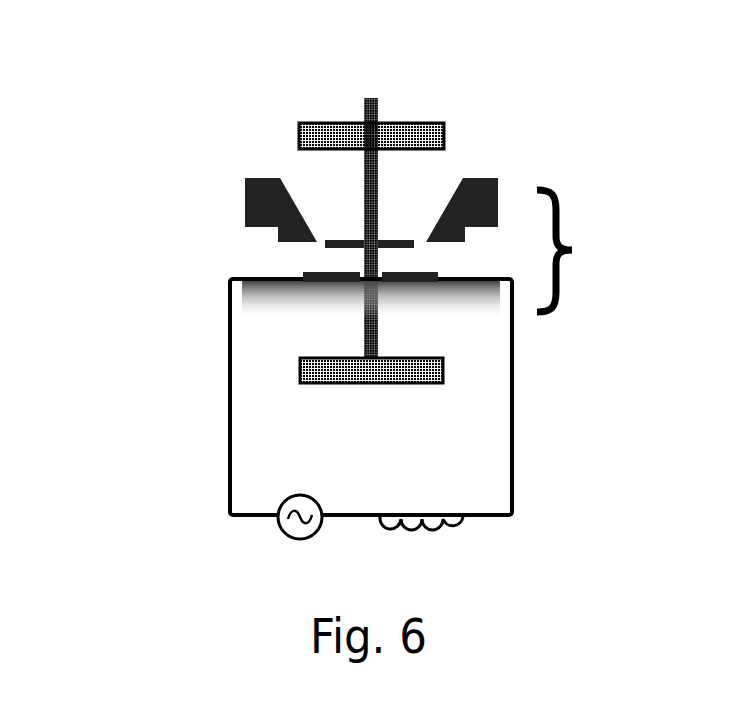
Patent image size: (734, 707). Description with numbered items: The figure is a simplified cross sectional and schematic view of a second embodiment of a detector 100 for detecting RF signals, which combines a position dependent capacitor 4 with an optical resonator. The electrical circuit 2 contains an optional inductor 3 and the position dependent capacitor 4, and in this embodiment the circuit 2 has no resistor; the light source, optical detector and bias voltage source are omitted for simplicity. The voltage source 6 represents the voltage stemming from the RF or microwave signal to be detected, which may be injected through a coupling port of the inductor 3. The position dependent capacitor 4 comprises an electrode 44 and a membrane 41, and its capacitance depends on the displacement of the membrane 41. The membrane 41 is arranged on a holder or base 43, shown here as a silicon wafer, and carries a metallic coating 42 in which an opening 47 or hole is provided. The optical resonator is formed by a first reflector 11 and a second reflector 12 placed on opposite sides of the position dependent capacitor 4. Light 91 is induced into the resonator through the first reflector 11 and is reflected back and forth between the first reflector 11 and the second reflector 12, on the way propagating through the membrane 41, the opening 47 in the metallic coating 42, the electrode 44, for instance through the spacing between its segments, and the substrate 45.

The detector 100 is at (189, 165).
The first reflector 11 is at (320, 138).
The second reflector 12 is at (397, 375).
The light 91 is at (368, 97).
The base 43 is at (485, 192).
The position dependent capacitor 4 is at (573, 250).
The membrane 41 is at (282, 242).
The metallic coating 42 is at (378, 245).
The opening 47 is at (337, 251).
The substrate 45 is at (263, 296).
The electrode 44 is at (417, 282).
The electrical circuit 2 is at (228, 413).
The voltage source 6 is at (282, 525).
The inductor 3 is at (457, 527).